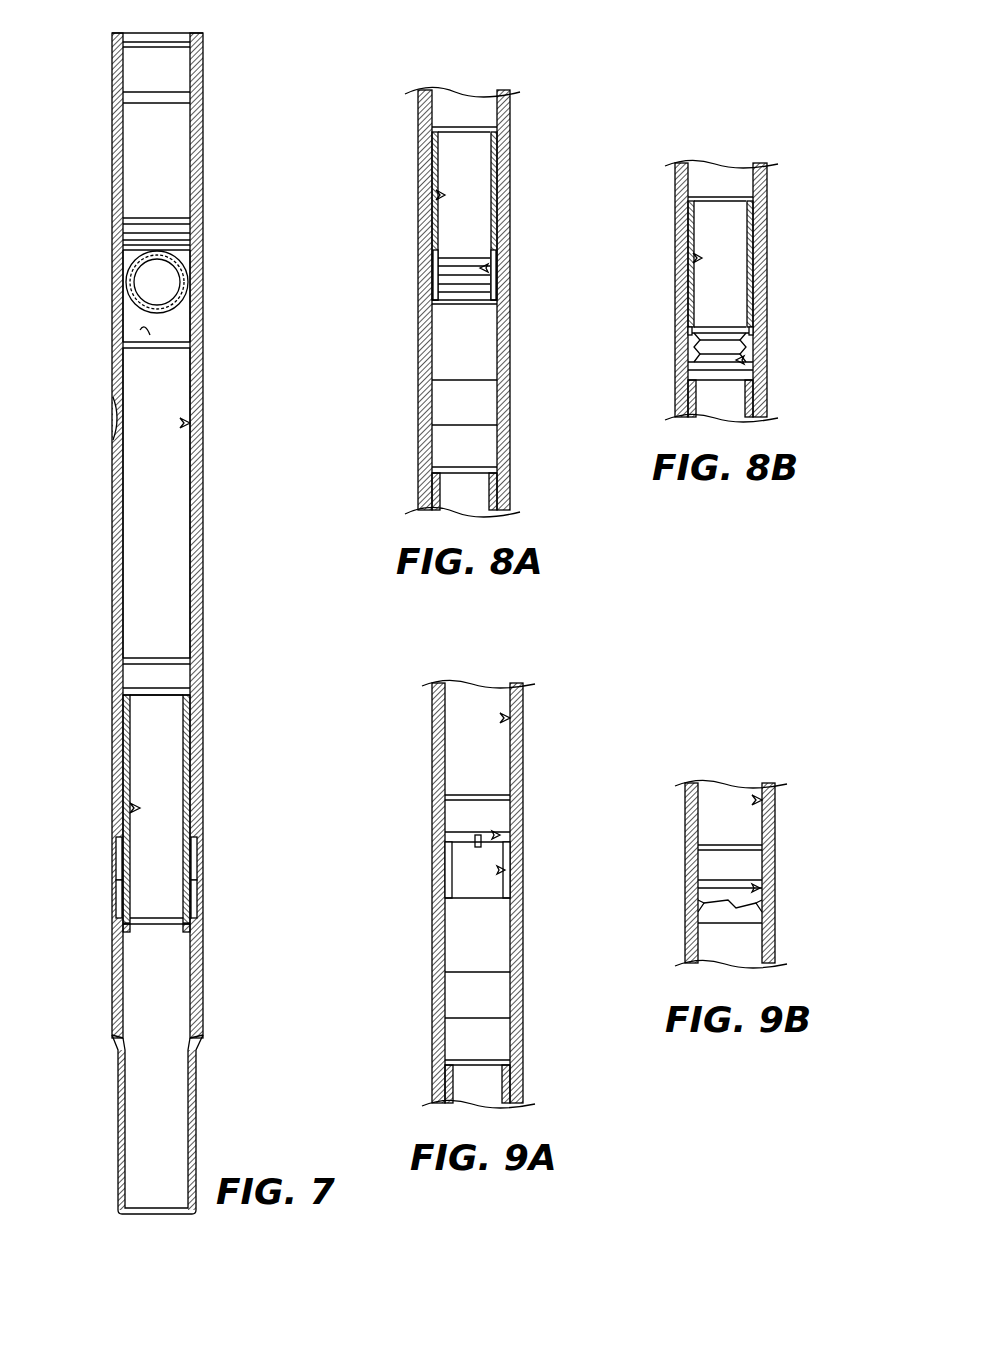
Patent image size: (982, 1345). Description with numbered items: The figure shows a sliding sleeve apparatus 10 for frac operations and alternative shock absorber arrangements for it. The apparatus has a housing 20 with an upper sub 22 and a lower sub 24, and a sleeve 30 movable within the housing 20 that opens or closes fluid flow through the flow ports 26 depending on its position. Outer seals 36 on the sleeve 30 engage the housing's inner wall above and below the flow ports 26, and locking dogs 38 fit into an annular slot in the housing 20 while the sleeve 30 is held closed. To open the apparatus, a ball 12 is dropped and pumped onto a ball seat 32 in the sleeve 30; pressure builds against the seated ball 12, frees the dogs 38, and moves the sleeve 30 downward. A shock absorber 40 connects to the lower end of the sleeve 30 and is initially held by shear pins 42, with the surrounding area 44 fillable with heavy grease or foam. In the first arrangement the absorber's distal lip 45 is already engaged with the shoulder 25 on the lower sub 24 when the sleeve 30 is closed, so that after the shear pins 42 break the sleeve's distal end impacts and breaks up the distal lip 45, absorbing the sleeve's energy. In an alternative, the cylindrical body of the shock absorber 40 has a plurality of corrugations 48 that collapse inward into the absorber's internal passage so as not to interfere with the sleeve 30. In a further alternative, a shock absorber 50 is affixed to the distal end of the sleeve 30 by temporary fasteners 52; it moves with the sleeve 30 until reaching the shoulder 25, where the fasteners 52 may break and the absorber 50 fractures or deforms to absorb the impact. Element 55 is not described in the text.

In FIG. 7, the sliding sleeve apparatus 10 is at (76, 72).
In FIG. 7, the ball 12 is at (200, 256).
In FIG. 7, the housing 20 is at (112, 516).
In FIG. 8A, the housing 20 is at (418, 112).
In FIG. 8B, the housing 20 is at (675, 182).
In FIG. 9A, the housing 20 is at (432, 705).
In FIG. 9B, the housing 20 is at (685, 812).
In FIG. 7, the upper sub 22 is at (112, 100).
In FIG. 7, the lower sub 24 is at (112, 1012).
In FIG. 7, the shoulder 25 is at (190, 918).
In FIG. 8A, the shoulder 25 is at (428, 466).
In FIG. 8B, the shoulder 25 is at (688, 364).
In FIG. 9A, the shoulder 25 is at (440, 1060).
In FIG. 9B, the shoulder 25 is at (762, 908).
In FIG. 7, the flow ports 26 is at (112, 398).
In FIG. 7, the sleeve 30 is at (190, 423).
In FIG. 9A, the sleeve 30 is at (510, 718).
In FIG. 9B, the sleeve 30 is at (762, 800).
In FIG. 7, the ball seat 32 is at (112, 300).
In FIG. 7, the outer seals 36 is at (203, 362).
In FIG. 7, the locking dogs 38 is at (203, 630).
In FIG. 8A, the locking dogs 38 is at (510, 176).
In FIG. 7, the shock absorber 40 is at (130, 808).
In FIG. 8A, the shock absorber 40 is at (436, 195).
In FIG. 8B, the shock absorber 40 is at (693, 258).
In FIG. 7, the shear pins 42 is at (112, 698).
In FIG. 8A, the shear pins 42 is at (432, 134).
In FIG. 7, the area 44 is at (118, 862).
In FIG. 8A, the area 44 is at (432, 270).
In FIG. 7, the distal lip 45 is at (112, 932).
In FIG. 8A, the distal lip 45 is at (428, 306).
In FIG. 8B, the distal lip 45 is at (688, 218).
In FIG. 8A, the corrugations 48 is at (488, 268).
In FIG. 8B, the corrugations 48 is at (744, 360).
In FIG. 9A, the shock absorber 50 is at (505, 870).
In FIG. 9B, the shock absorber 50 is at (760, 888).
In FIG. 9A, the temporary fasteners 52 is at (500, 835).
In FIG. 9A, the seat 55 is at (445, 900).
In FIG. 9B, the seat 55 is at (698, 926).